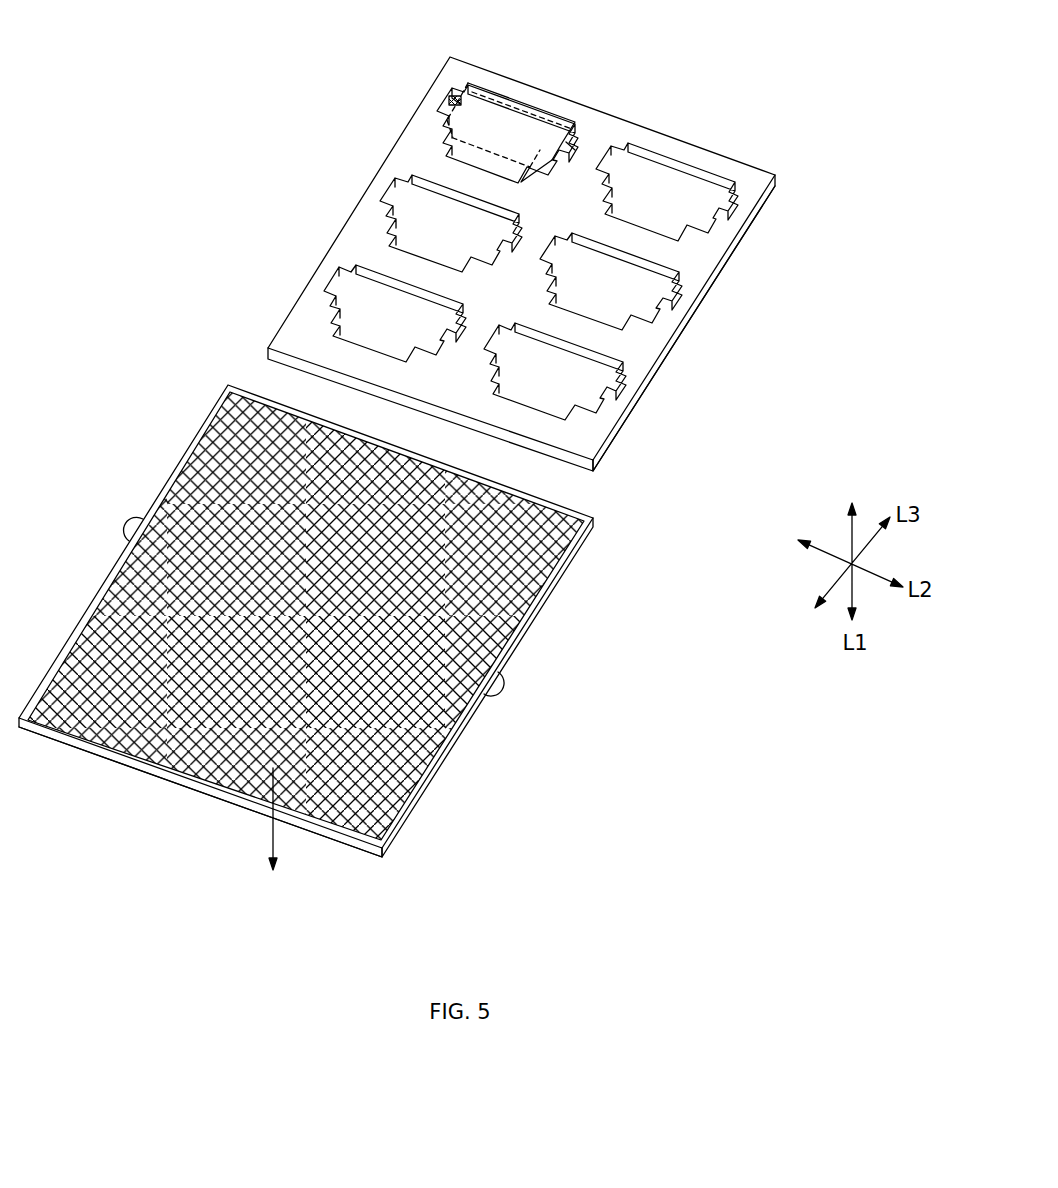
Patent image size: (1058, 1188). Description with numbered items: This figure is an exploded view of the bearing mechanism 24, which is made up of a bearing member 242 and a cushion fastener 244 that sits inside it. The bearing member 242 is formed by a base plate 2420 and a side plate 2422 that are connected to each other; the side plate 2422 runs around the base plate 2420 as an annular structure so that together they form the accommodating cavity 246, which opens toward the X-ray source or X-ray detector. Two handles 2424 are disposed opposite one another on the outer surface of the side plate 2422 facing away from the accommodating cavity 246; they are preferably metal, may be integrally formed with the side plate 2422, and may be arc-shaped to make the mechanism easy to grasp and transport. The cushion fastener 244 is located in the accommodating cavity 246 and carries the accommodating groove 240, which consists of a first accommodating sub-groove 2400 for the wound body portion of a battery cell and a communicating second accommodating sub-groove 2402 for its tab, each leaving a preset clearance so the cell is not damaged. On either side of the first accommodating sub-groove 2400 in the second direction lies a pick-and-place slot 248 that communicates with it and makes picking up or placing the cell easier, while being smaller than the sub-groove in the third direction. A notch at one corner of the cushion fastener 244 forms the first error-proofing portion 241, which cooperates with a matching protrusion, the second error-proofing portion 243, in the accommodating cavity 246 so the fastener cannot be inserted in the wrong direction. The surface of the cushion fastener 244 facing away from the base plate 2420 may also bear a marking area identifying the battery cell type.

The bearing mechanism 24 is at (180, 225).
The accommodating groove 240 is at (466, 101).
The first accommodating sub-groove 2400 is at (452, 100).
The second accommodating sub-groove 2402 is at (445, 153).
The pick-and-place slot 248 is at (576, 136).
The cushion fastener 244 is at (662, 330).
The first error-proofing portion 241 is at (591, 466).
The bearing member 242 is at (312, 662).
The base plate 2420 is at (452, 707).
The side plate 2422 is at (518, 653).
The handle 2424 is at (120, 518).
The second error-proofing portion 243 is at (375, 855).
The accommodating cavity 246 is at (277, 837).